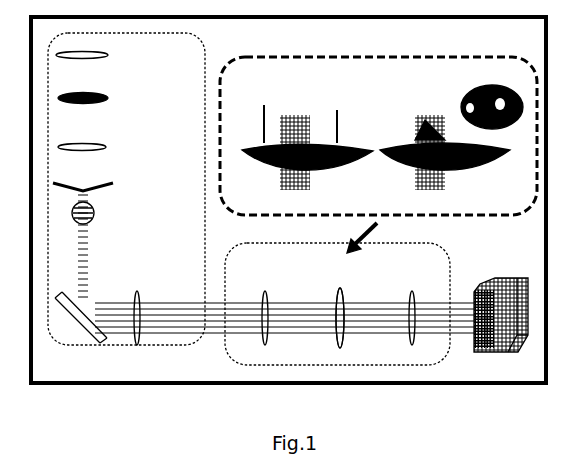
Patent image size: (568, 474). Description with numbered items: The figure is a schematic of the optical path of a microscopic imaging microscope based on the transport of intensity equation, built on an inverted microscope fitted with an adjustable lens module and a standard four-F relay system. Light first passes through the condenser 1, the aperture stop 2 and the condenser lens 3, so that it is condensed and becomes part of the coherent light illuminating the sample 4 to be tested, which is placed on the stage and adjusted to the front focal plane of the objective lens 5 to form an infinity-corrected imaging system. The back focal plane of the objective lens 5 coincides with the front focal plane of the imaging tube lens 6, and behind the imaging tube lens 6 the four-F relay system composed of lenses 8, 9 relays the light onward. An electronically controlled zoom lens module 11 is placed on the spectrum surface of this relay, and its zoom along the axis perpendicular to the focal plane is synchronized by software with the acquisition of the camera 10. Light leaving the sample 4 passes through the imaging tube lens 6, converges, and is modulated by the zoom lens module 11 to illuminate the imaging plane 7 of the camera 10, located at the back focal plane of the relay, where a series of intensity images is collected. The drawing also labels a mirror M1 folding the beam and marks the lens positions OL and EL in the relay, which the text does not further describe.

The condenser 1 is at (99, 56).
The aperture stop 2 is at (100, 99).
The condenser lens 3 is at (100, 149).
The sample to be tested 4 is at (97, 190).
The objective lens 5 is at (107, 217).
The imaging tube lens 6 is at (138, 306).
The imaging plane 7 is at (126, 189).
The lens 8 is at (265, 306).
The lens 9 is at (411, 306).
The camera 10 is at (501, 332).
The electronically controlled zoom lens module 11 is at (378, 136).
The mirror M1 is at (79, 320).
The objective lens OL is at (355, 270).
The eyepiece lens EL is at (335, 318).